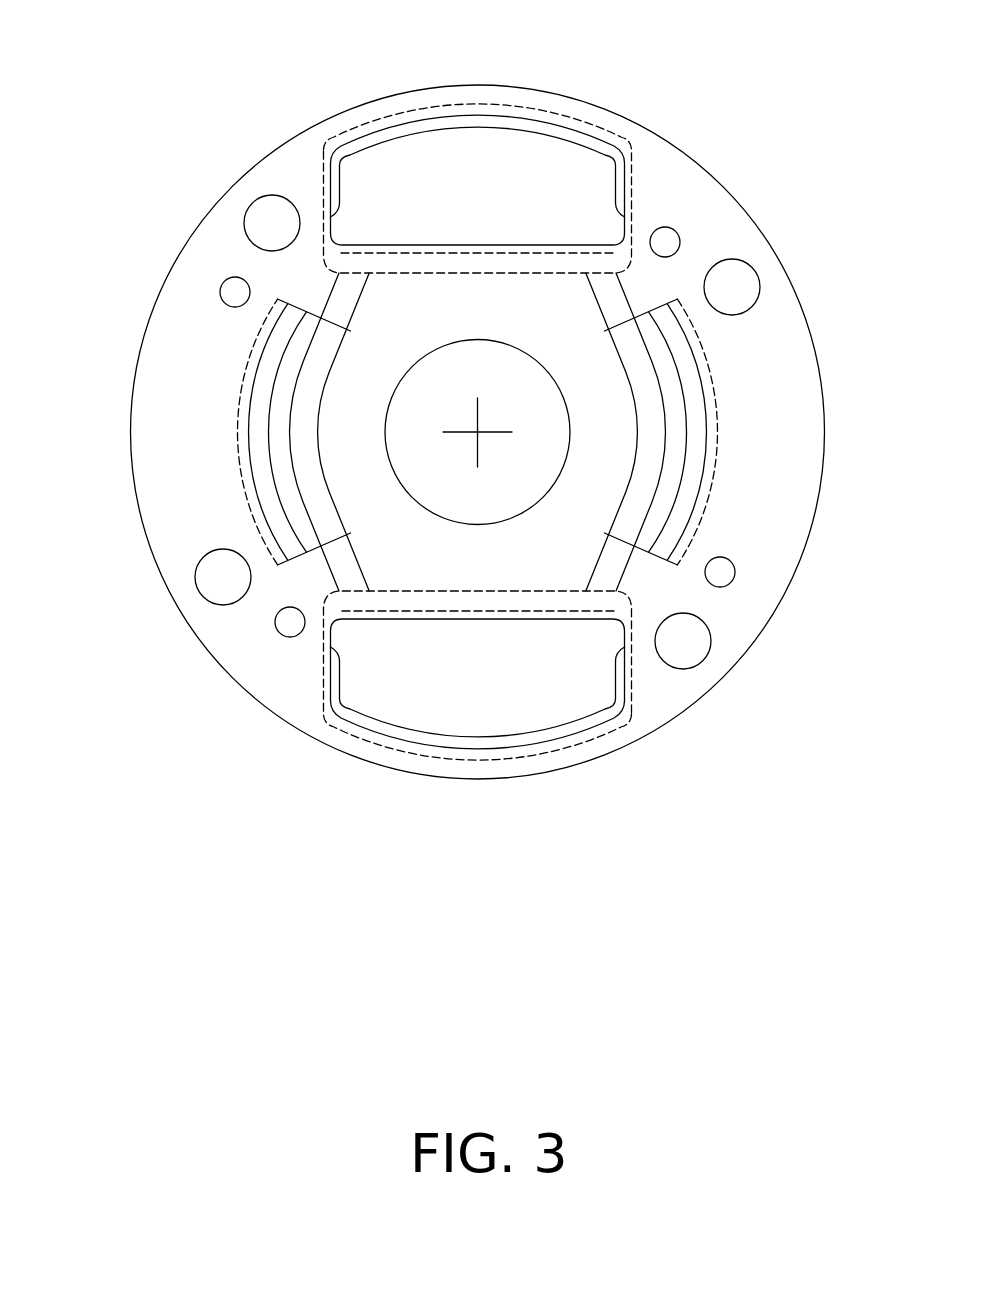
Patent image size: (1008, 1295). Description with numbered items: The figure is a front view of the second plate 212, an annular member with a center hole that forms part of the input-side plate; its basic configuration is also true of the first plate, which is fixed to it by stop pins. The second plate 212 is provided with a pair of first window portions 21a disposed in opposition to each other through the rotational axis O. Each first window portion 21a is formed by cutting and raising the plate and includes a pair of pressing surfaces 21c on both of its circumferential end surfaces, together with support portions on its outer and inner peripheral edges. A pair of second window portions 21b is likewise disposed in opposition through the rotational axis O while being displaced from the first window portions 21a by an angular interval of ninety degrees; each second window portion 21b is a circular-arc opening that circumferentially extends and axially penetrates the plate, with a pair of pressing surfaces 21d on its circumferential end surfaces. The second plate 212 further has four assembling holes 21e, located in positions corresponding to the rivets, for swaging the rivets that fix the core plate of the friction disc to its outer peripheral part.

The second plate 212 is at (733, 180).
The first window portion 21a is at (506, 128).
The second window portion 21b is at (686, 398).
The pressing surface 21c is at (333, 214).
The pressing surface 21d is at (647, 318).
The assembling hole 21e is at (268, 198).
The rotational axis O is at (511, 407).